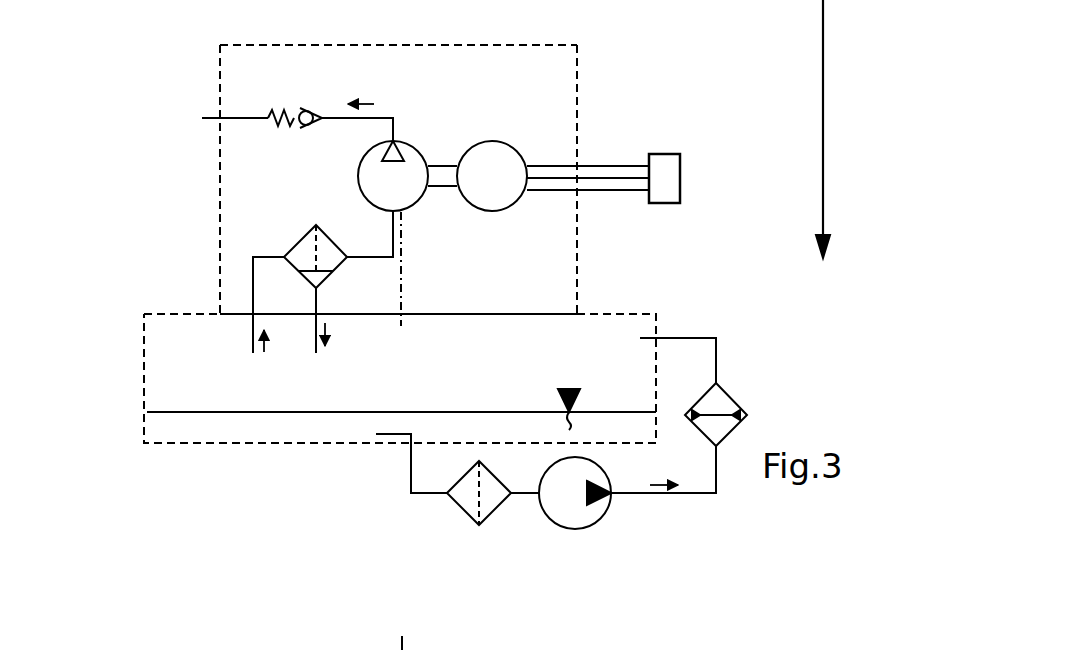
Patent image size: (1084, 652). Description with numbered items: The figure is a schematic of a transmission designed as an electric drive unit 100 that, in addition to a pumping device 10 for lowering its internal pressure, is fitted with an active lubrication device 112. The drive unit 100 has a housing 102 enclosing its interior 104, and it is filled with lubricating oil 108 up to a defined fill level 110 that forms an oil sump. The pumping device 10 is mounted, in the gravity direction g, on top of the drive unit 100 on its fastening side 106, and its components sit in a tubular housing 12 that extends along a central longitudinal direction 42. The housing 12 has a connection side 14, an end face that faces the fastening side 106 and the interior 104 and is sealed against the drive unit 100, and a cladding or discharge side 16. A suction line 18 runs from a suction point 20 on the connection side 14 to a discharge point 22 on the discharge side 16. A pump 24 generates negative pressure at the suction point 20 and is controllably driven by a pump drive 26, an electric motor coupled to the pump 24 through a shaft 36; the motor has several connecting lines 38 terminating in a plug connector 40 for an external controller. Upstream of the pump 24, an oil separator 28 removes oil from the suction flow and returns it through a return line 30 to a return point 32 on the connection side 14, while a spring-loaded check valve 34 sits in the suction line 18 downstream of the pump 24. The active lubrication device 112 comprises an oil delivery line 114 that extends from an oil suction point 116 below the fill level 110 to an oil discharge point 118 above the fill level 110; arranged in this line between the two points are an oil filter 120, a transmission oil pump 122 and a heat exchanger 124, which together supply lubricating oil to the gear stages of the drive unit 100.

The pumping device 10 is at (590, 62).
The housing 12 is at (577, 108).
The connection side 14 is at (432, 320).
The cladding side 16 is at (210, 186).
The suction line 18 is at (410, 108).
The suction point 20 is at (248, 322).
The discharge point 22 is at (211, 112).
The pump 24 is at (412, 143).
The pump drive 26 is at (500, 140).
The oil separator 28 is at (302, 223).
The return line 30 is at (326, 305).
The return point 32 is at (306, 332).
The check valve 34 is at (286, 100).
The shaft 36 is at (442, 176).
The connecting lines 38 is at (620, 152).
The plug connector 40 is at (664, 176).
The central longitudinal direction 42 is at (402, 285).
The electric drive unit 100 is at (118, 466).
The housing 102 is at (144, 370).
The interior 104 is at (164, 340).
The fastening side 106 is at (606, 312).
The lubricating oil 108 is at (193, 424).
The fill level 110 is at (574, 384).
The active lubrication device 112 is at (692, 530).
The oil delivery line 114 is at (716, 476).
The oil suction point 116 is at (372, 440).
The oil discharge point 118 is at (654, 332).
The oil filter 120 is at (462, 524).
The transmission oil pump 122 is at (577, 533).
The heat exchanger 124 is at (744, 398).